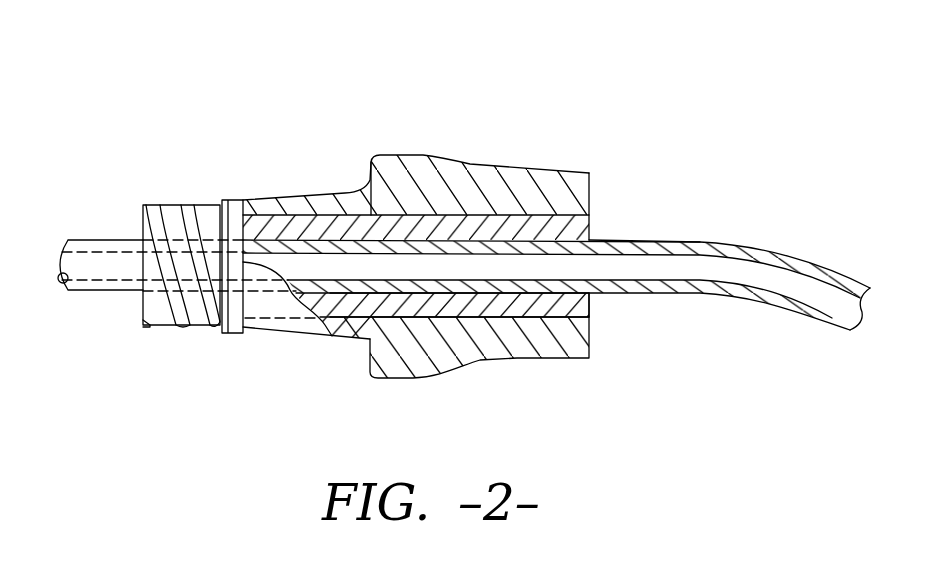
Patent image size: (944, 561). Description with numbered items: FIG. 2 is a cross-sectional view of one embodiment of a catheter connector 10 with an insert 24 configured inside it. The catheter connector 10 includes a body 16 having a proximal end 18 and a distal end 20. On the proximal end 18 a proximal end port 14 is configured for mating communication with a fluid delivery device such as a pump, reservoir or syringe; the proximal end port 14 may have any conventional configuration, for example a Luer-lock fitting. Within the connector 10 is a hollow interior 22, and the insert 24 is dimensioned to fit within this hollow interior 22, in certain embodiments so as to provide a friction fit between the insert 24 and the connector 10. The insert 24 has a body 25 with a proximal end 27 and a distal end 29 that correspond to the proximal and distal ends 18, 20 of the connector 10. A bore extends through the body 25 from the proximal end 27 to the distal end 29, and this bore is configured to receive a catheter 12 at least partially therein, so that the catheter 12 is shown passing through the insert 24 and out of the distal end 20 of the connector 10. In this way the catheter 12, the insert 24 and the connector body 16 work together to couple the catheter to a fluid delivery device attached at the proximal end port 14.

The catheter connector 10 is at (580, 130).
The catheter 12 is at (738, 239).
The proximal end port 14 is at (205, 203).
The body 16 is at (345, 191).
The proximal end 18 is at (142, 302).
The distal end 20 is at (592, 332).
The hollow interior 22 is at (438, 265).
The insert 24 is at (533, 212).
The body 25 is at (457, 303).
The proximal end 27 is at (228, 198).
The distal end 29 is at (592, 226).